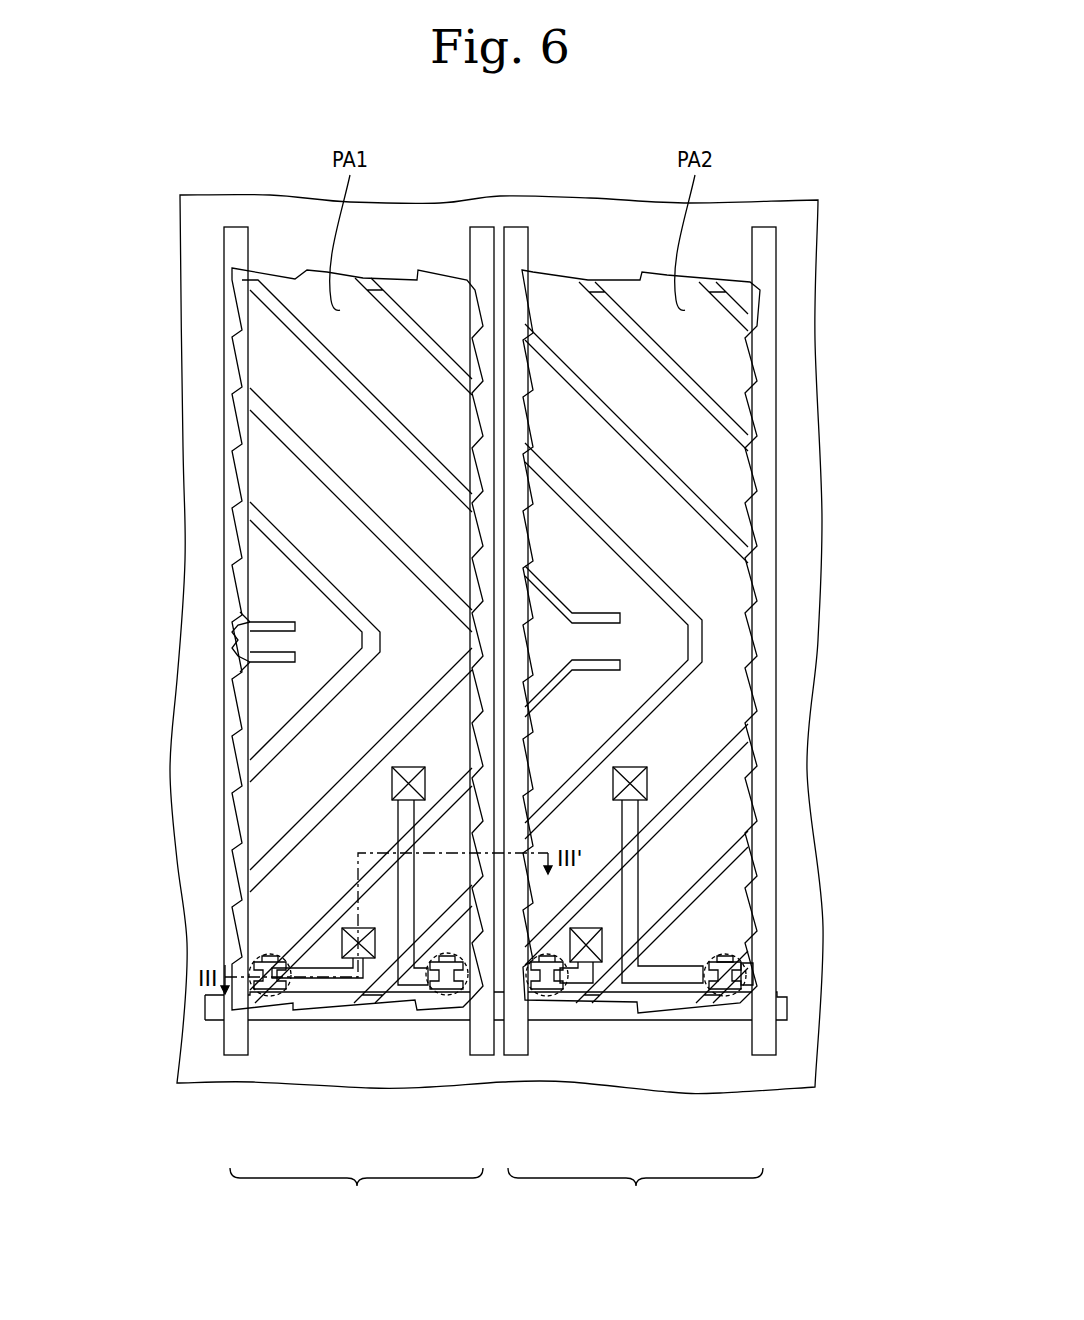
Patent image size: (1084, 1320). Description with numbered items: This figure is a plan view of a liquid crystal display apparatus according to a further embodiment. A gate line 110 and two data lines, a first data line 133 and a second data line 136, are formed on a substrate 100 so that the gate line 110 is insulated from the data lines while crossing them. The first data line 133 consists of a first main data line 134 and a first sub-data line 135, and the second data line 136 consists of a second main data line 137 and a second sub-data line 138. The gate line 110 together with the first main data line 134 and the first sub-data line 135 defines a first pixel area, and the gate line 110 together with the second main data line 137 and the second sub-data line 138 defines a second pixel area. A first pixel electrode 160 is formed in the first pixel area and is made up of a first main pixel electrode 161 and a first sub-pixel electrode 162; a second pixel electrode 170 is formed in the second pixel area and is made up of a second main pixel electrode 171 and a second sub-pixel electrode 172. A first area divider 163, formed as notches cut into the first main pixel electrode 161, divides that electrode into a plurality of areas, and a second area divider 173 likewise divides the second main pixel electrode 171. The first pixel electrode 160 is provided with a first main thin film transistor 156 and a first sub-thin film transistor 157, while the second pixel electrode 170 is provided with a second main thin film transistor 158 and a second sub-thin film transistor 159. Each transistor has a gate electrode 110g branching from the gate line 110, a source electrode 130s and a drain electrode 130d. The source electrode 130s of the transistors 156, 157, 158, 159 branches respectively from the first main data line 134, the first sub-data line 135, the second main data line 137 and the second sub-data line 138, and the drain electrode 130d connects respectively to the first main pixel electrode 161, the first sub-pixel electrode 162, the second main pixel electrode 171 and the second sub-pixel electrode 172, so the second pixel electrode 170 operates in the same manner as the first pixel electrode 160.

The substrate 100 is at (787, 1090).
The gate line 110 is at (787, 1005).
The gate electrode 110g is at (727, 957).
The drain electrode 130d is at (713, 970).
The source electrode 130s is at (737, 978).
The first data line 133 is at (356, 1190).
The first main data line 134 is at (233, 1055).
The first sub-data line 135 is at (480, 1055).
The second data line 136 is at (635, 1190).
The second main data line 137 is at (513, 1055).
The second sub-data line 138 is at (757, 1055).
The first main thin film transistor 156 is at (270, 997).
The first sub-thin film transistor 157 is at (447, 997).
The second main thin film transistor 158 is at (548, 997).
The second sub-thin film transistor 159 is at (725, 997).
The first pixel electrode 160 is at (265, 639).
The first main pixel electrode 161 is at (282, 483).
The first sub-pixel electrode 162 is at (300, 405).
The first area divider 163 is at (290, 727).
The second pixel electrode 170 is at (736, 641).
The second main pixel electrode 171 is at (740, 485).
The second sub-pixel electrode 172 is at (740, 580).
The second area divider 173 is at (740, 440).